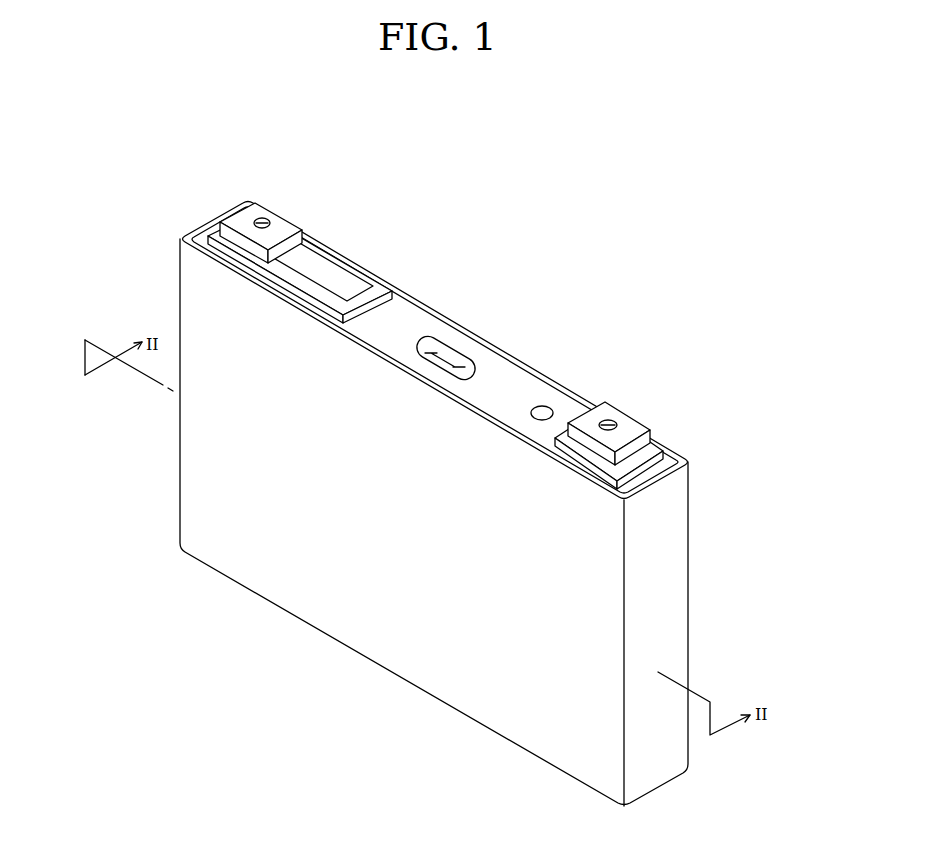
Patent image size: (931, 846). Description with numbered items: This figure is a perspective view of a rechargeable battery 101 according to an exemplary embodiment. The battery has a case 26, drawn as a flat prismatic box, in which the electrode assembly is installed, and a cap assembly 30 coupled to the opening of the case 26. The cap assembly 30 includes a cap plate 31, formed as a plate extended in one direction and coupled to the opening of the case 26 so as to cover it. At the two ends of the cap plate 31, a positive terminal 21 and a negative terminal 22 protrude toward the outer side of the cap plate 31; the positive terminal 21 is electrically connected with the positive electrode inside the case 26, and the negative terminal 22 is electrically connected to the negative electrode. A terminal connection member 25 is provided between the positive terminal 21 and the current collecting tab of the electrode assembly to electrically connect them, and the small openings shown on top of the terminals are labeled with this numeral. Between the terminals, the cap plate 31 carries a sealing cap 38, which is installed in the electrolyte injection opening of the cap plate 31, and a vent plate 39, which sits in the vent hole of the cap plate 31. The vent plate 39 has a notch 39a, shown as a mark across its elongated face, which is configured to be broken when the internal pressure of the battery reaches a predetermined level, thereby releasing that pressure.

The rechargeable battery 101 is at (434, 479).
The positive terminal 21 is at (634, 428).
The negative terminal 22 is at (291, 228).
The terminal connection member 25 is at (263, 218).
The case 26 is at (383, 640).
The cap assembly 30 is at (435, 350).
The cap plate 31 is at (407, 322).
The sealing cap 38 is at (543, 407).
The vent plate 39 is at (469, 330).
The notch 39a is at (458, 360).